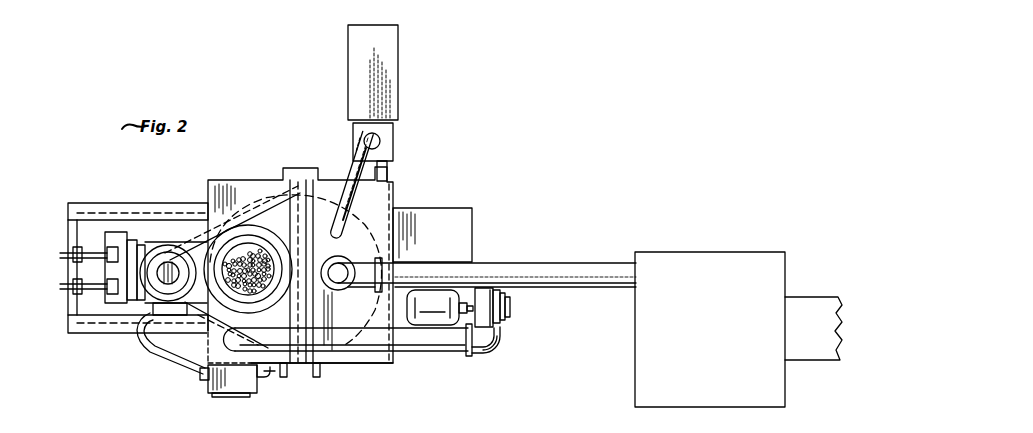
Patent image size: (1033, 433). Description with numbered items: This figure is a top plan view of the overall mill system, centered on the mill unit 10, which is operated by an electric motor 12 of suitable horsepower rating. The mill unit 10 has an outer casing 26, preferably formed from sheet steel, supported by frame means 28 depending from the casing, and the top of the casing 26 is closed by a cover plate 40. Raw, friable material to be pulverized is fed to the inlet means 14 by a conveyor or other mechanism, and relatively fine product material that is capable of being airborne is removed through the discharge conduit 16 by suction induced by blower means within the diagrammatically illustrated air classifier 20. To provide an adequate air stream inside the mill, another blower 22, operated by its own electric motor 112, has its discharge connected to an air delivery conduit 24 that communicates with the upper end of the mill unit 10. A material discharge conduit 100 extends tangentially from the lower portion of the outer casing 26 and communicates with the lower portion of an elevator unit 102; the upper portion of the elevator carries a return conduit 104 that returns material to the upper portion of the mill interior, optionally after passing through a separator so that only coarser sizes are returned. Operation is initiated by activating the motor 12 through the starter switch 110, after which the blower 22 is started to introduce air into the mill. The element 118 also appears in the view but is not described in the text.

The mill unit 10 is at (404, 191).
The electric motor 12 is at (160, 250).
The inlet means 14 is at (230, 247).
The discharge conduit 16 is at (530, 268).
The air classifier 20 is at (710, 260).
The blower 22 is at (496, 330).
The air delivery conduit 24 is at (422, 348).
The outer casing 26 is at (241, 180).
The frame means 28 is at (207, 347).
The cover plate 40 is at (383, 243).
The material discharge conduit 100 is at (388, 173).
The elevator unit 102 is at (395, 72).
The return conduit 104 is at (350, 178).
The starter switch 110 is at (277, 377).
The electric motor 112 is at (442, 312).
The outlet duct 118 is at (807, 302).